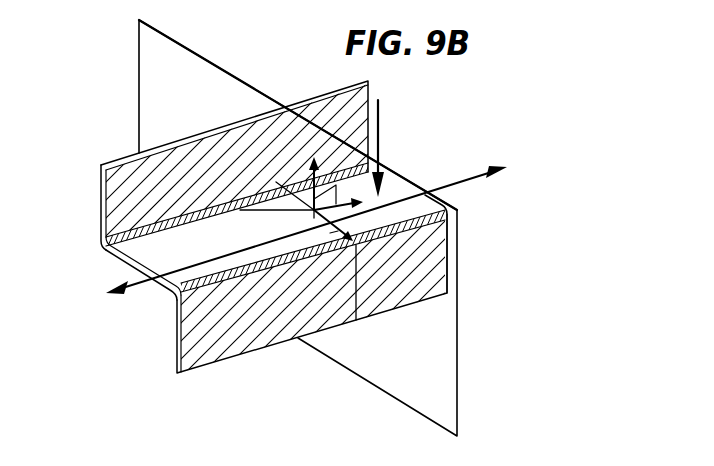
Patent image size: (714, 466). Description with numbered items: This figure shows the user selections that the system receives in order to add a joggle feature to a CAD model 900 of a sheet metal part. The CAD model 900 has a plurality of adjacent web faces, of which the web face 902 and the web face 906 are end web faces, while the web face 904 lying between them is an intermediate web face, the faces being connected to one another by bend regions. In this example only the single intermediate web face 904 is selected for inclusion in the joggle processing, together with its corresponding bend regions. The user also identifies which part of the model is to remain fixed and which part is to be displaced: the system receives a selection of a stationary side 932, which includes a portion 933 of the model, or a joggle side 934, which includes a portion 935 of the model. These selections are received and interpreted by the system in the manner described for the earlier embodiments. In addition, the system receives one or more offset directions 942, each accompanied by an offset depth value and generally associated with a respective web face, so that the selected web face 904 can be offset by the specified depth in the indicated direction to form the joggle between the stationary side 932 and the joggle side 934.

The CAD model 900 is at (126, 124).
The web face 902 is at (105, 212).
The web face 904 is at (240, 224).
The web face 906 is at (208, 359).
The stationary side 932 is at (146, 286).
The portion 933 is at (127, 256).
The joggle side 934 is at (474, 182).
The portion 935 is at (387, 187).
The offset direction 942 is at (381, 114).